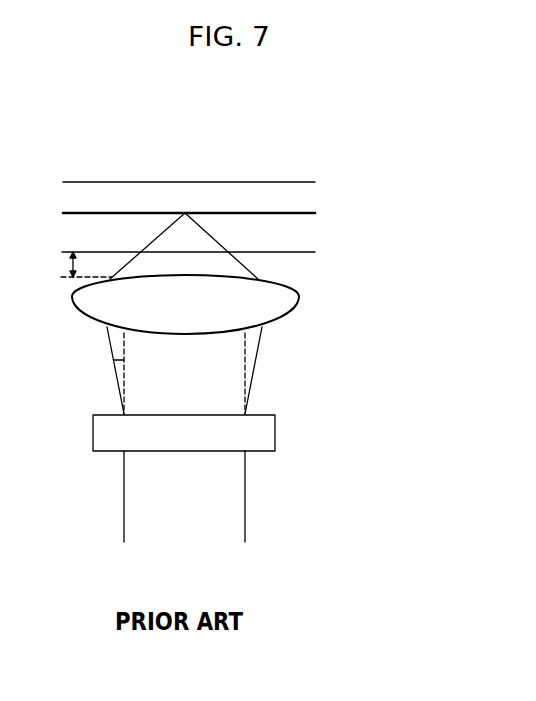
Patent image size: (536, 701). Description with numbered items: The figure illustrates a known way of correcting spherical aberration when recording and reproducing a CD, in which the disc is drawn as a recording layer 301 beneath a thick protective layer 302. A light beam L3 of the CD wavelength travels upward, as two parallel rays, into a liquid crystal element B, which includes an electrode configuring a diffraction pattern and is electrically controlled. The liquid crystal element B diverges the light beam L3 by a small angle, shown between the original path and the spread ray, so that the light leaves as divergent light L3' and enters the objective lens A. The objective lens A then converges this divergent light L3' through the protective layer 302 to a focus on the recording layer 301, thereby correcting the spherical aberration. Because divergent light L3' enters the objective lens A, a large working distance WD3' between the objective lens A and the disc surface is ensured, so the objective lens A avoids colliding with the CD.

The compact disc CD is at (193, 181).
The recording layer 301 is at (302, 212).
The protective layer 302 is at (307, 242).
The working distance WD3' is at (59, 264).
The objective lens A is at (300, 295).
The divergent light L3' is at (150, 370).
The liquid crystal element B is at (276, 432).
The light beam L3 is at (149, 496).